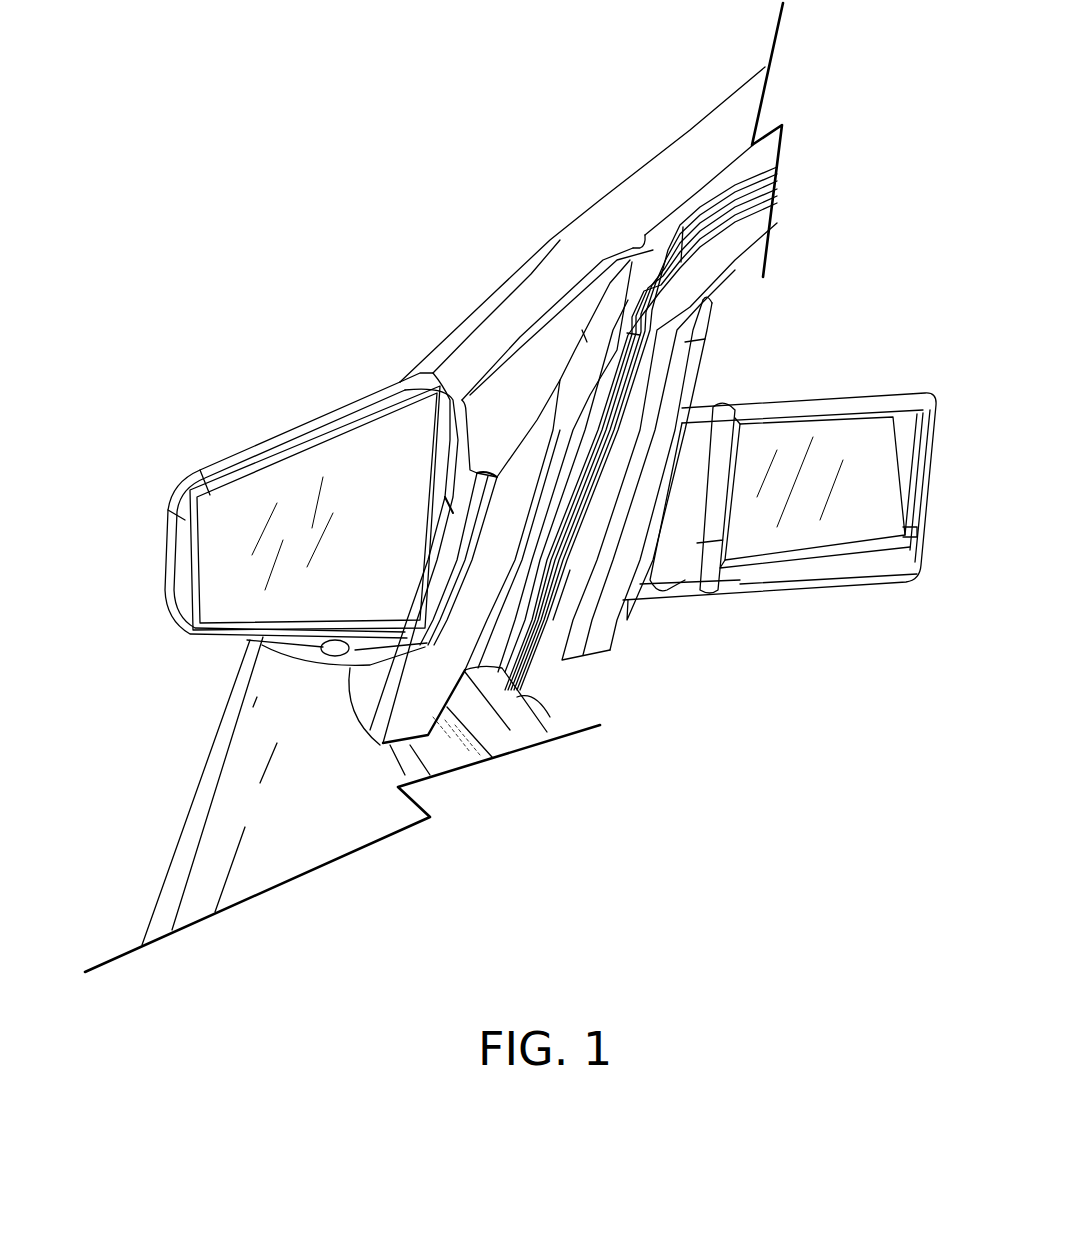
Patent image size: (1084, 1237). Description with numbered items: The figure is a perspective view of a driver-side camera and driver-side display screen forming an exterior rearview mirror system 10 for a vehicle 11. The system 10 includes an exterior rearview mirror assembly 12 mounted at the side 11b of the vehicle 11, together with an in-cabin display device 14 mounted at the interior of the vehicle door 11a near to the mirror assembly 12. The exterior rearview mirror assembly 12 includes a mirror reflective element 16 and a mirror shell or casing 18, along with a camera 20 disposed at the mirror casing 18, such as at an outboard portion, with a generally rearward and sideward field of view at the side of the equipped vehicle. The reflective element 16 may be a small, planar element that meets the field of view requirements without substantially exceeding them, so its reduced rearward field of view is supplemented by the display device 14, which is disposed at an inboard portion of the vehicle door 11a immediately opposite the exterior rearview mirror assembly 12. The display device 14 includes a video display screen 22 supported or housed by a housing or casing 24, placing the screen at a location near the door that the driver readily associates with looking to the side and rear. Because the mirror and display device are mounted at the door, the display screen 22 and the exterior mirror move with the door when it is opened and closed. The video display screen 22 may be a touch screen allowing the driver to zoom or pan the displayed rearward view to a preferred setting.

The exterior rearview mirror system 10 is at (339, 265).
The vehicle 11 is at (550, 162).
The vehicle door 11a is at (529, 274).
The side of the vehicle 11b is at (212, 848).
The exterior rearview mirror assembly 12 is at (343, 406).
The display device 14 is at (747, 407).
The mirror reflective element 16 is at (238, 580).
The mirror casing 18 is at (220, 468).
The camera 20 is at (327, 660).
The video display screen 22 is at (807, 527).
The housing 24 is at (848, 405).